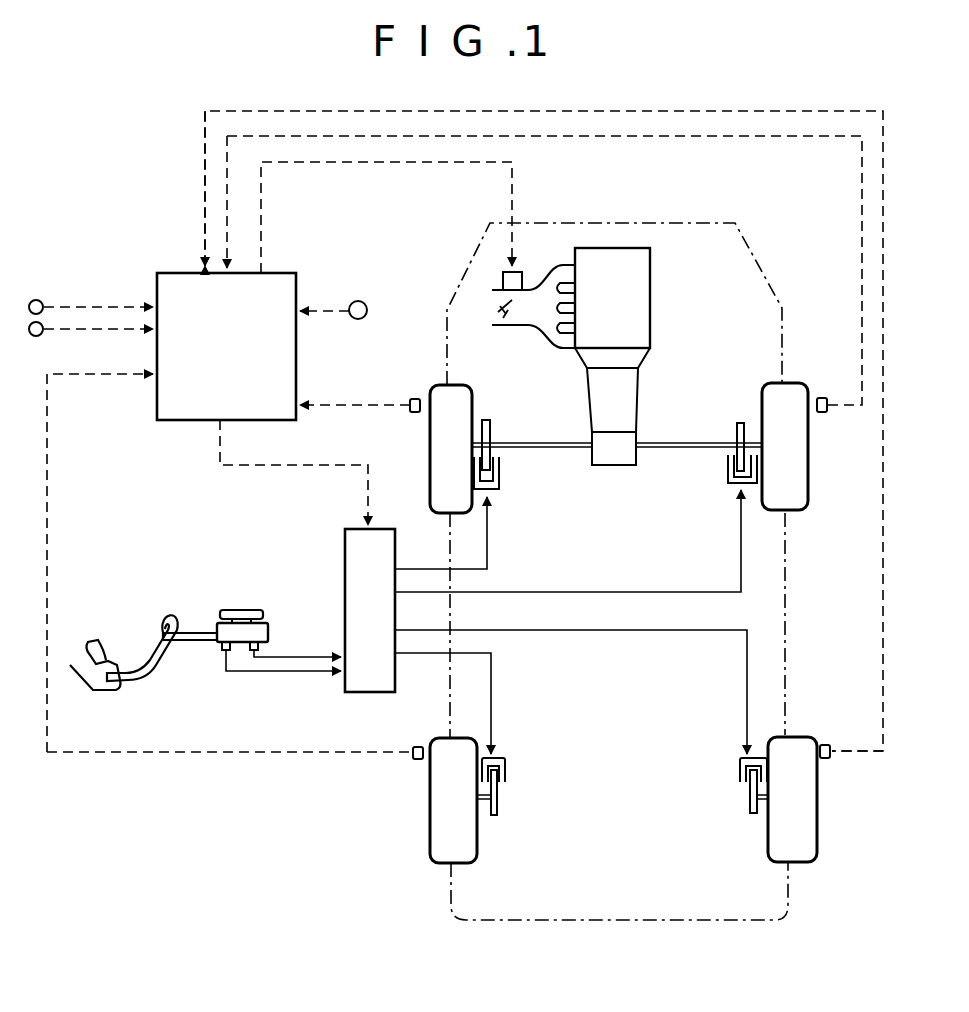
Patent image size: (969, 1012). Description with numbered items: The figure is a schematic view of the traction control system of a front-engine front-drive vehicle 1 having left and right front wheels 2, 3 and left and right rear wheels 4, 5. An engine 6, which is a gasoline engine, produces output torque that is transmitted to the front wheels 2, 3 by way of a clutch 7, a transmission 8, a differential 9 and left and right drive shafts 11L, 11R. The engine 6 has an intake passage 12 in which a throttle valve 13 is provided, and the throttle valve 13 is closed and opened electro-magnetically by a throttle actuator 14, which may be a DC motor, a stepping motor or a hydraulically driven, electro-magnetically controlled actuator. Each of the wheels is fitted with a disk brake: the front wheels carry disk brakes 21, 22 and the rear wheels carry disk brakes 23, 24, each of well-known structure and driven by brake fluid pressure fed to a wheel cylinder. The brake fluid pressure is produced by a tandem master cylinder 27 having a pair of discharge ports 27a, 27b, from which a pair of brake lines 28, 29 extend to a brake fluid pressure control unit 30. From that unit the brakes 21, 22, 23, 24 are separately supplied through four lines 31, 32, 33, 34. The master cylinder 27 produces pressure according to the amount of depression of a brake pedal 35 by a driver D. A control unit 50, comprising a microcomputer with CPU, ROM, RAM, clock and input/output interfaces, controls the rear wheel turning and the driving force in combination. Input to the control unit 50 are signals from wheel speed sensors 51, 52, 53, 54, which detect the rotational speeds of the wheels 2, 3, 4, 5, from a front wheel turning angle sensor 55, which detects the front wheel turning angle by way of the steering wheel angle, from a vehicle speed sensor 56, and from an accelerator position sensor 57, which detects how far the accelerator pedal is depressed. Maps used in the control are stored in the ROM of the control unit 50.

The vehicle 1 is at (724, 934).
The left front wheel 2 is at (431, 452).
The right front wheel 3 is at (808, 508).
The left rear wheel 4 is at (432, 832).
The right rear wheel 5 is at (812, 854).
The engine 6 is at (654, 327).
The clutch 7 is at (648, 361).
The transmission 8 is at (638, 408).
The differential 9 is at (620, 466).
The left drive shaft 11L is at (548, 449).
The right drive shaft 11R is at (692, 449).
The intake passage 12 is at (528, 328).
The throttle valve 13 is at (504, 320).
The throttle actuator 14 is at (522, 276).
The disk brake 21 is at (500, 427).
The disk brake 22 is at (730, 426).
The disk brake 23 is at (508, 778).
The disk brake 24 is at (738, 786).
The tandem master cylinder 27 is at (250, 608).
The discharge port 27a is at (264, 646).
The discharge port 27b is at (226, 652).
The brake line 28 is at (310, 655).
The brake line 29 is at (300, 673).
The brake fluid pressure control unit 30 is at (372, 693).
The line 31 is at (489, 553).
The line 32 is at (625, 590).
The line 33 is at (493, 706).
The line 34 is at (666, 631).
The brake pedal 35 is at (152, 673).
The driver D is at (100, 656).
The control unit 50 is at (296, 273).
The wheel speed sensor 51 is at (413, 397).
The wheel speed sensor 52 is at (823, 396).
The wheel speed sensor 53 is at (412, 758).
The wheel speed sensor 54 is at (830, 753).
The front wheel turning angle sensor 55 is at (38, 300).
The vehicle speed sensor 56 is at (36, 336).
The accelerator position sensor 57 is at (362, 301).